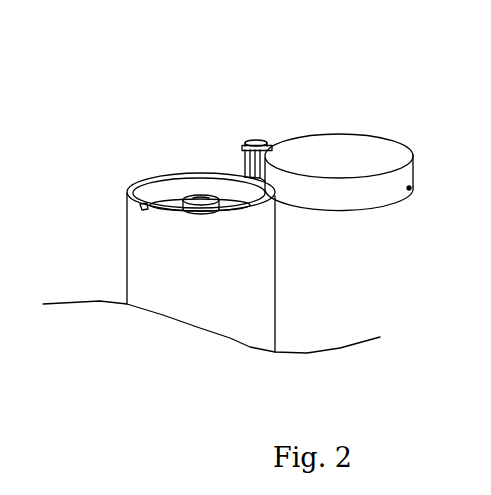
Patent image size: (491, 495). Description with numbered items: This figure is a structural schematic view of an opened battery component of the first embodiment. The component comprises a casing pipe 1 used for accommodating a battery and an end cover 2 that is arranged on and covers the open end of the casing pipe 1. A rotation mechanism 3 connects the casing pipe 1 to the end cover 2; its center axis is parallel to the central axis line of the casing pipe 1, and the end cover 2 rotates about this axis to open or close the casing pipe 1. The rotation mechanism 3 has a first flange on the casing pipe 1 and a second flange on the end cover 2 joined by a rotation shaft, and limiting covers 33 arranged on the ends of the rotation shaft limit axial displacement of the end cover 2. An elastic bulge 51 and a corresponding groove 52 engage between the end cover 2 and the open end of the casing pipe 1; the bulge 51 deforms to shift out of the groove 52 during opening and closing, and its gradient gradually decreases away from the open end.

The casing pipe 1 is at (240, 292).
The end cover 2 is at (372, 152).
The rotation mechanism 3 is at (243, 162).
The limiting covers 33 is at (259, 140).
The bulge 51 is at (147, 207).
The groove 52 is at (409, 189).